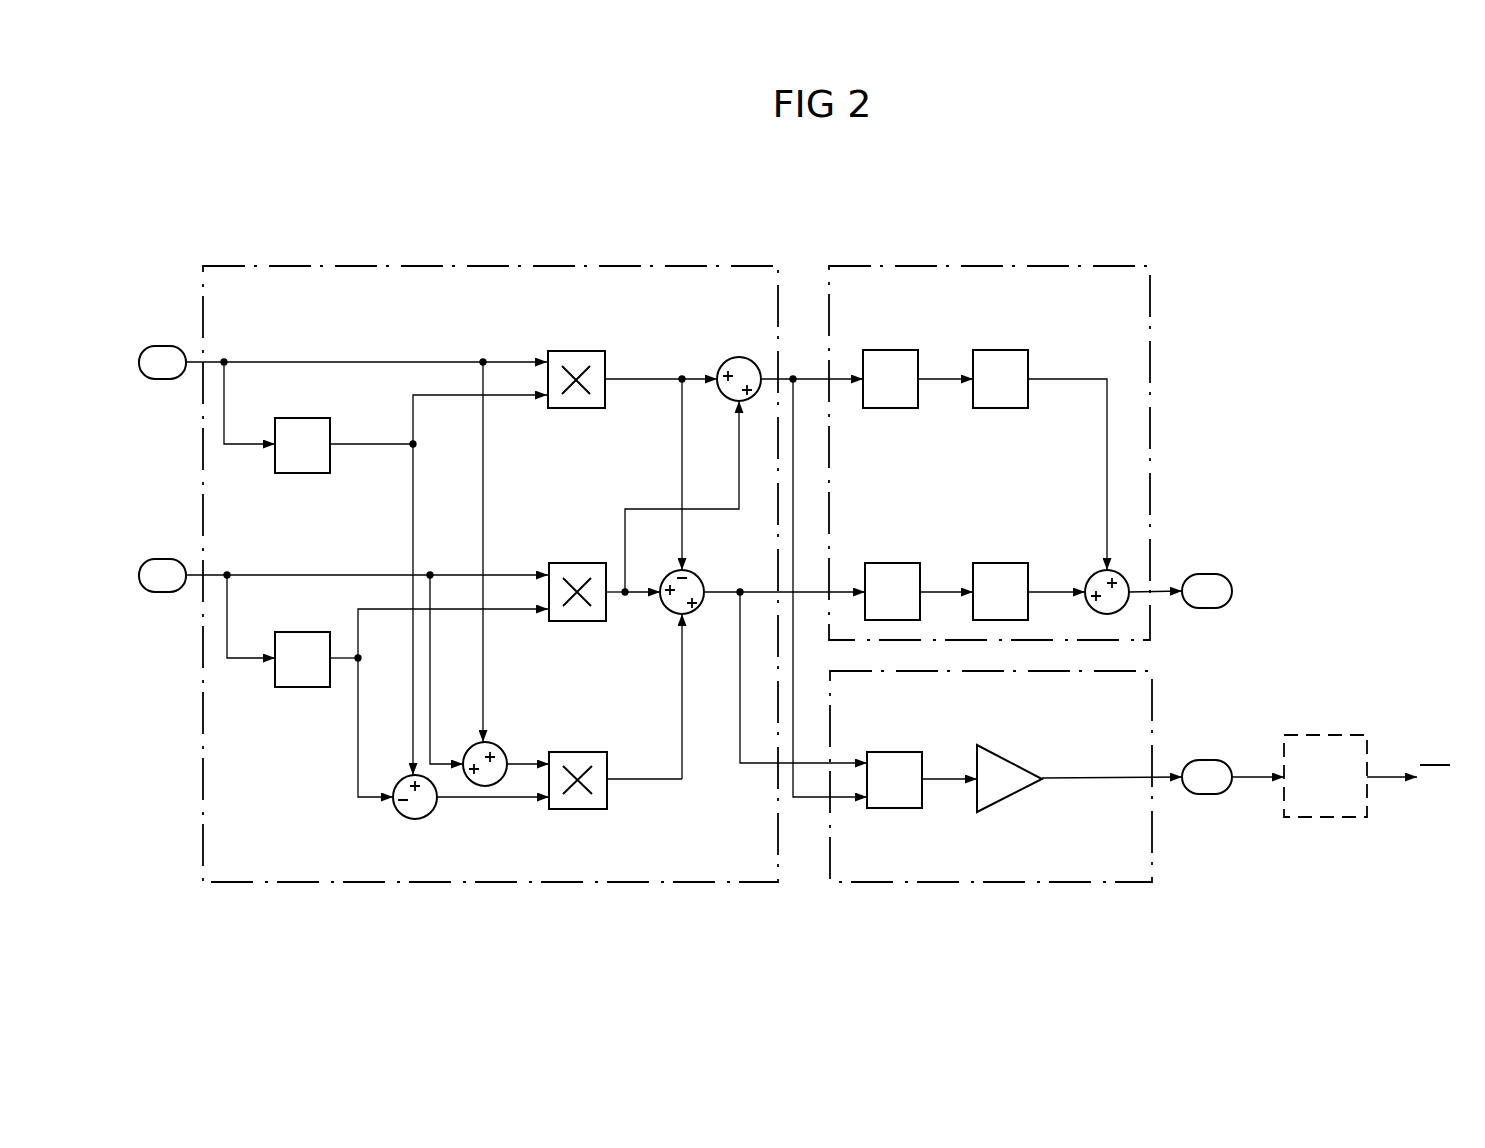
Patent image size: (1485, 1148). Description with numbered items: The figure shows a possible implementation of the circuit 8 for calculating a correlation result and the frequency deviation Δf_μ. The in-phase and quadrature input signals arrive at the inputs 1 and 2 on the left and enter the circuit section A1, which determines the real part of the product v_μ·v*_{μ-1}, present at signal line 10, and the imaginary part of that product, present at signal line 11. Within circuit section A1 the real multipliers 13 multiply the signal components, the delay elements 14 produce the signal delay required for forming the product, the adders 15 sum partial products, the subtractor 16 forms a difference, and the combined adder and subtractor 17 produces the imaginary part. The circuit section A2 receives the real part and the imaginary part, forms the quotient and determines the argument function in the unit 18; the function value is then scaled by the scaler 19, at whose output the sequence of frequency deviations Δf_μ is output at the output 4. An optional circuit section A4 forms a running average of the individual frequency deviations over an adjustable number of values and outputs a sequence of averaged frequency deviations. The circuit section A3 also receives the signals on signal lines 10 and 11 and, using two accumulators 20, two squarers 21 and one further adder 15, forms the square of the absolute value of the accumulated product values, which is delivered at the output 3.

The in-phase input In_I 1 is at (164, 378).
The quadrature input In_Q 2 is at (169, 592).
The output (signal power) 3 is at (1207, 591).
The output frequency offset Δf_μ 4 is at (1208, 802).
The circuit 8 is at (696, 222).
The signal line 10 is at (813, 378).
The signal line 11 is at (764, 590).
The real multiplier 13 is at (577, 350).
The delay element 14 is at (303, 474).
The adder 15 is at (738, 356).
The subtractor 16 is at (437, 812).
The combined adder and subtractor 17 is at (668, 611).
The unit 18 is at (893, 752).
The scaler 19 is at (993, 748).
The accumulator 20 is at (892, 350).
The squarer 21 is at (1001, 350).
The circuit section A1 is at (350, 265).
The circuit section A2 is at (983, 883).
The circuit section A3 is at (1085, 265).
The circuit section A4 is at (1315, 735).